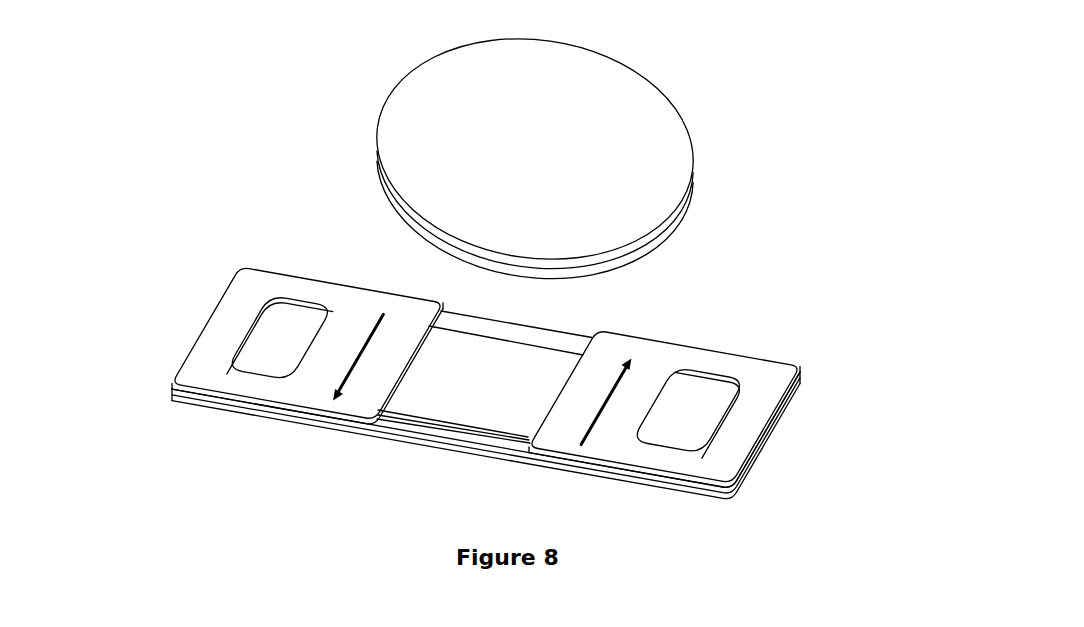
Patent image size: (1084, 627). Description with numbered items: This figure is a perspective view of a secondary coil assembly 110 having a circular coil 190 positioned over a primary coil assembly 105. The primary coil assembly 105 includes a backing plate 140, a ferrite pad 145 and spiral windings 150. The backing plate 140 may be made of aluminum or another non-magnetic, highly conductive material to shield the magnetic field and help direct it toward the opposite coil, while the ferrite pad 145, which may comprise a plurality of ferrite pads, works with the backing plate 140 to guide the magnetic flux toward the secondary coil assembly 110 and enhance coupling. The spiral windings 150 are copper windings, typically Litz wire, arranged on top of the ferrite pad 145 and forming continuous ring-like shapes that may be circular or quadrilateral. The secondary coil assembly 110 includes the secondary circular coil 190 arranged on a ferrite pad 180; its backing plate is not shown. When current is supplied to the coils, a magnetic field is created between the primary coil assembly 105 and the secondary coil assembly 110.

The primary coil assembly 105 is at (488, 383).
The secondary coil assembly 110 is at (557, 159).
The backing plate 140 is at (497, 442).
The ferrite pad 145 is at (479, 403).
The spiral windings 150 is at (190, 373).
The ferrite pad 180 is at (473, 98).
The circular coil 190 is at (570, 268).